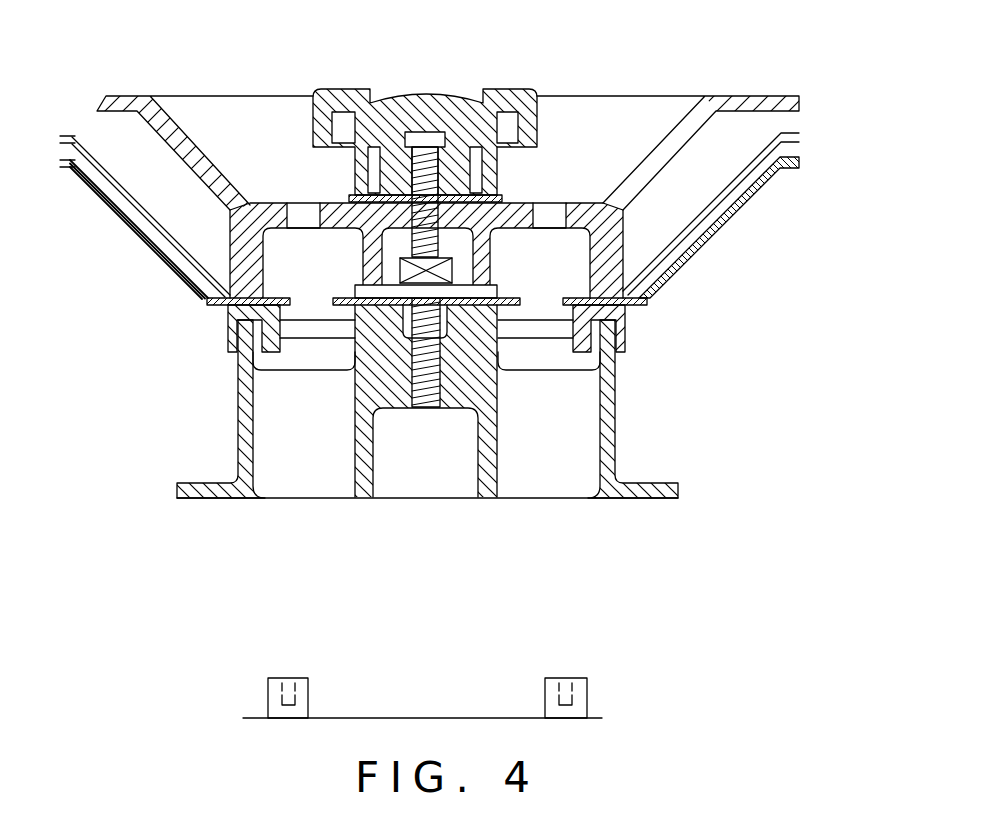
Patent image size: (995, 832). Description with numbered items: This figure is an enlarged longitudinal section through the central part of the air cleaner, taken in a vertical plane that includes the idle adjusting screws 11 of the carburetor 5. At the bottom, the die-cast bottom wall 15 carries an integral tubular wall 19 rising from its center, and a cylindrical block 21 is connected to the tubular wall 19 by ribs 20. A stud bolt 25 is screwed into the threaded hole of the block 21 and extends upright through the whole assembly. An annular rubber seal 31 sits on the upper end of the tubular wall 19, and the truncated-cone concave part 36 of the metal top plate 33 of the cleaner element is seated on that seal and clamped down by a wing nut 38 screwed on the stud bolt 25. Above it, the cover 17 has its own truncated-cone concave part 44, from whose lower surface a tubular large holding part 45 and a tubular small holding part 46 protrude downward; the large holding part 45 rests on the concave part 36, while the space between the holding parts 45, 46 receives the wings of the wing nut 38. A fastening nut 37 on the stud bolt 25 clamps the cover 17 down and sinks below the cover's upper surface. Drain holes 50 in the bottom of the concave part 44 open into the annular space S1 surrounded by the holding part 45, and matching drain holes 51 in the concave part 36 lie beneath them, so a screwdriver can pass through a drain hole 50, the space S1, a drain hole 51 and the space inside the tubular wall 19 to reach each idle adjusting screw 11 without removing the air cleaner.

The carburetor 5 is at (417, 717).
The idle adjusting screw 11 is at (272, 678).
The bottom wall 15 is at (197, 502).
The cover 17 is at (122, 96).
The tubular wall 19 is at (613, 435).
The ribs 20 is at (302, 467).
The cylindrical block 21 is at (493, 455).
The stud bolt 25 is at (433, 243).
The annular rubber seal 31 is at (227, 333).
The top plate 33 is at (72, 137).
The concave part 36 is at (212, 307).
The fastening nut 37 is at (348, 89).
The wing nut 38 is at (487, 290).
The concave part 44 is at (582, 203).
The tubular large holding part 45 is at (665, 270).
The tubular small holding part 46 is at (365, 250).
The drain holes 50 is at (303, 212).
The drain holes 51 is at (313, 302).
The space S1 is at (287, 264).